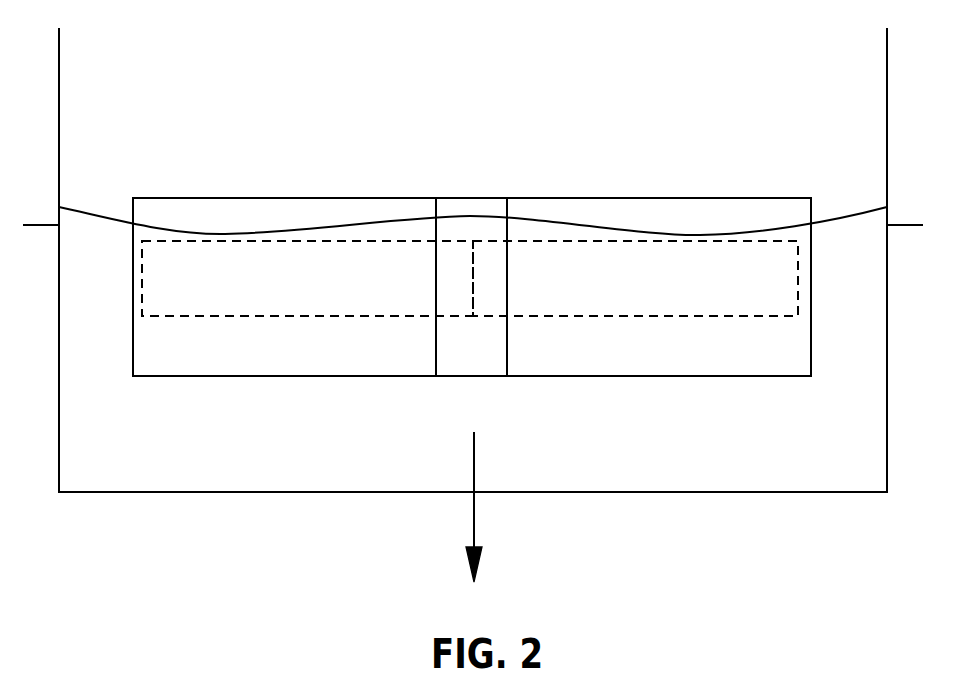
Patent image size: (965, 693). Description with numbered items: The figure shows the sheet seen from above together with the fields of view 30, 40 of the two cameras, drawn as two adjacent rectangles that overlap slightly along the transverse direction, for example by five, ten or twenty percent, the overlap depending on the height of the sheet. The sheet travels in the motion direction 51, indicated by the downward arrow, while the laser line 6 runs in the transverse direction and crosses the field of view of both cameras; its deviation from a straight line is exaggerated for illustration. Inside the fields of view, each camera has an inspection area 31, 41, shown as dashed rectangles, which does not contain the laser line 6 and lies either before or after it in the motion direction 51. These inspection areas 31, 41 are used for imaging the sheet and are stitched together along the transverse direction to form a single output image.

The laser line 6 is at (33, 224).
The field of view 30 is at (323, 197).
The inspection area 31 is at (345, 317).
The field of view 40 is at (697, 197).
The inspection area 41 is at (683, 317).
The motion direction 51 is at (475, 517).